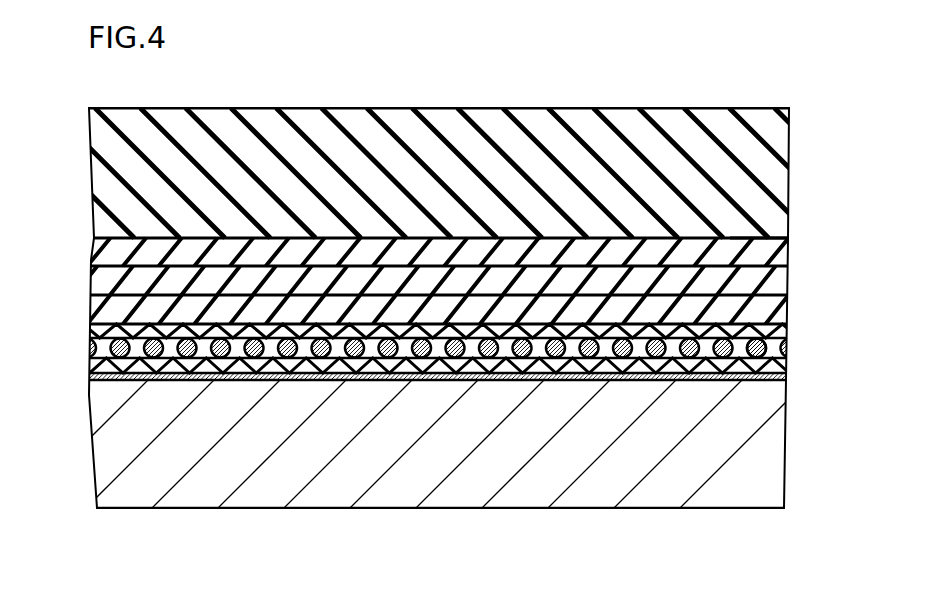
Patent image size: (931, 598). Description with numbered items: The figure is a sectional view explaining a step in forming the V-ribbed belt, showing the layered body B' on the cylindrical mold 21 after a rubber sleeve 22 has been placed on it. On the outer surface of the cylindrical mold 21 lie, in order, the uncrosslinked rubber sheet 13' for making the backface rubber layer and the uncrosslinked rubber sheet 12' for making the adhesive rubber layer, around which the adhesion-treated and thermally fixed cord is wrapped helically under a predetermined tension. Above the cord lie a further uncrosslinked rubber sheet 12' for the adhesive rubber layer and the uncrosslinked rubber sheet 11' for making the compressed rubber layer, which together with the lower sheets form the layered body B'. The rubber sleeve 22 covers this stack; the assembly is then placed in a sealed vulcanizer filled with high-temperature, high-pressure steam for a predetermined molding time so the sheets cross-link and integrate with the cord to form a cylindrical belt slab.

The rubber sleeve 22 is at (445, 162).
The uncrosslinked rubber sheet for making the compressed rubber layer 11' is at (426, 281).
The uncrosslinked rubber sheet for making the adhesive rubber layer 12' is at (422, 348).
The uncrosslinked rubber sheet for making the backface rubber layer 13' is at (464, 396).
The layered body B' is at (791, 211).
The cylindrical mold 21 is at (440, 455).